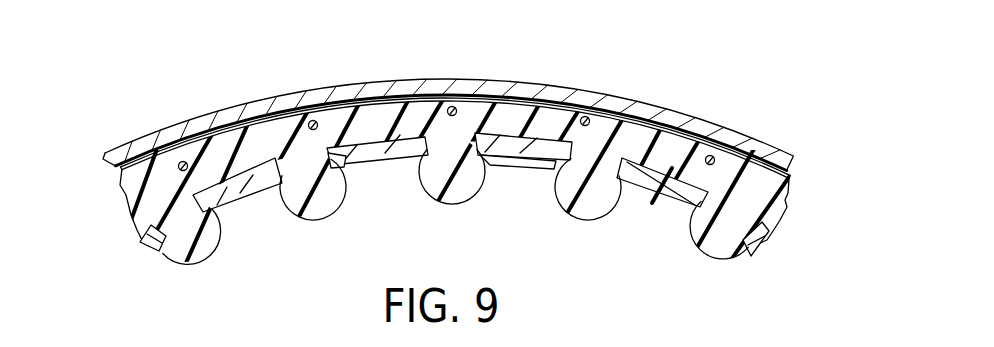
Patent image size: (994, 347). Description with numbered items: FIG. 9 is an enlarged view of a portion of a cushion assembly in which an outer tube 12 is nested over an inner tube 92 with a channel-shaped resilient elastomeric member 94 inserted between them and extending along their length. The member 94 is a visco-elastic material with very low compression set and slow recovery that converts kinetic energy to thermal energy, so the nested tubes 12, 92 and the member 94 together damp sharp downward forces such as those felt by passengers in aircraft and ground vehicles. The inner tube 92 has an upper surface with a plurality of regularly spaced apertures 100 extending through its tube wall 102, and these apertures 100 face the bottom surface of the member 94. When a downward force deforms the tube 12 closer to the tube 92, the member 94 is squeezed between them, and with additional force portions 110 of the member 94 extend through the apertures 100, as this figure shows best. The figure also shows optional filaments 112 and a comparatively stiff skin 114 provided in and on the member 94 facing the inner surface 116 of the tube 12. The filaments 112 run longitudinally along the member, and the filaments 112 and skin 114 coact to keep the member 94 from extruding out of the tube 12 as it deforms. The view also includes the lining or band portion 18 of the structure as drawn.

The tube 12 is at (448, 98).
The lining band 18 is at (212, 112).
The inner nested tube 92 is at (652, 194).
The resilient elastomeric member 94 is at (127, 210).
The apertures 100 is at (142, 247).
The tube wall 102 is at (241, 187).
The portions of the member 110 is at (182, 250).
The filaments 112 is at (180, 161).
The skin 114 is at (146, 156).
The inner surface 116 is at (122, 172).